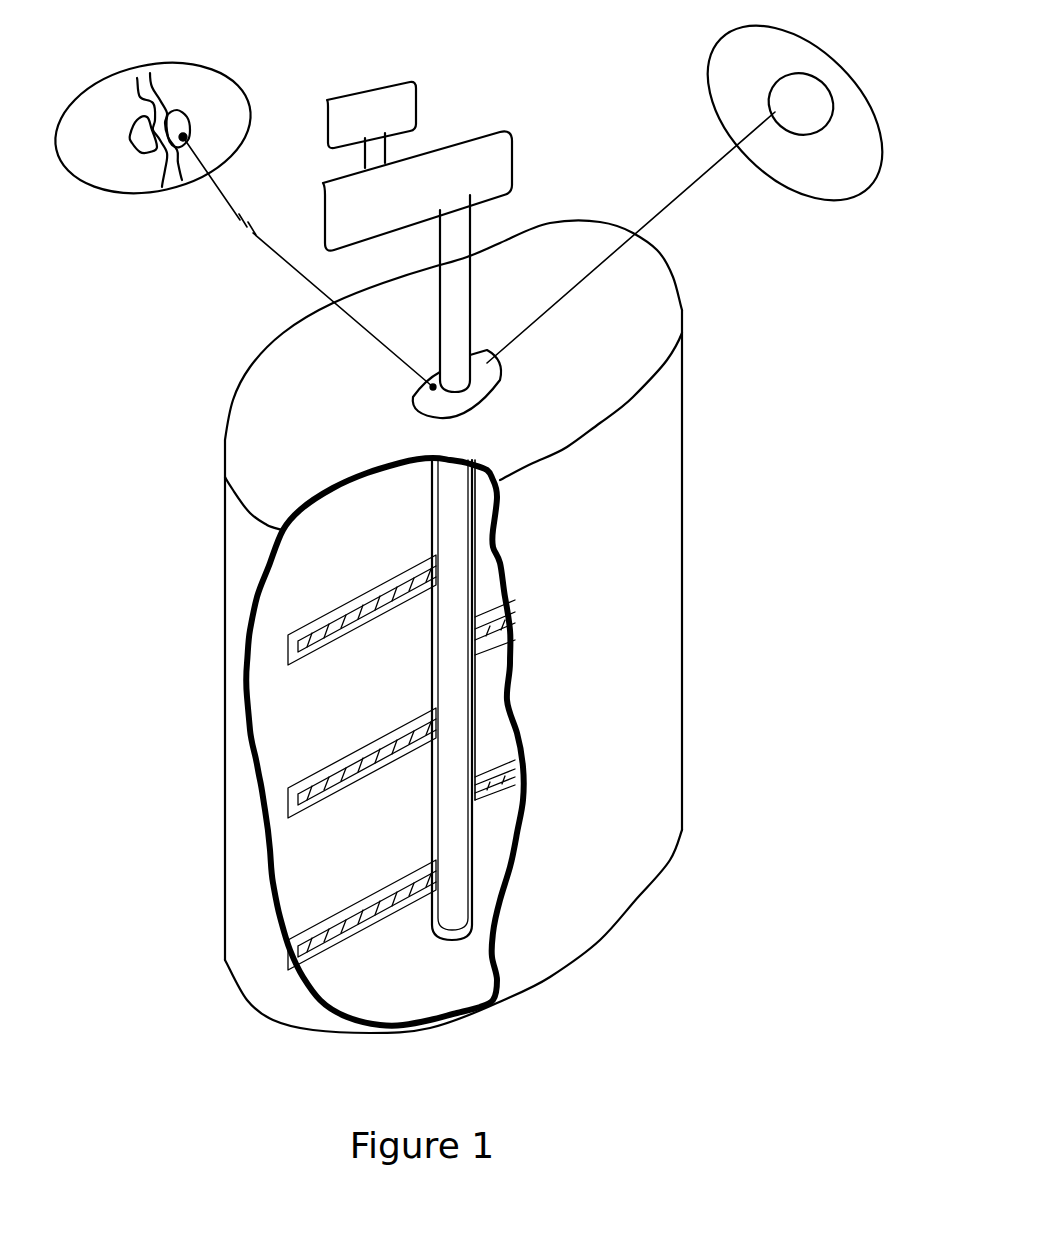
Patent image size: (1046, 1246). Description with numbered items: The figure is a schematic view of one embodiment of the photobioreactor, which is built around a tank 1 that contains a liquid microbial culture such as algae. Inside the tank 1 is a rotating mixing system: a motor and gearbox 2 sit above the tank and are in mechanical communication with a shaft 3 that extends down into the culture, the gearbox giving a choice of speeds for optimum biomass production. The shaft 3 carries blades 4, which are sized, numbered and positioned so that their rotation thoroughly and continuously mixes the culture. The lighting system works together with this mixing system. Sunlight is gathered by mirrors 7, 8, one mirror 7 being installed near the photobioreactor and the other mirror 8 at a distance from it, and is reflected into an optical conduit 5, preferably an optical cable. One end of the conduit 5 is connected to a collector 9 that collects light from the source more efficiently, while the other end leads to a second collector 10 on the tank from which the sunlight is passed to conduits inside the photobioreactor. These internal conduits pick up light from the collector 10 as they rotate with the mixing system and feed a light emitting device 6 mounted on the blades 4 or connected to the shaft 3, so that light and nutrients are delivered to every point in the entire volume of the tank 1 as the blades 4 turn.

The tank 1 is at (600, 665).
The motor and gearbox 2 is at (465, 165).
The shaft 3 is at (457, 572).
The blades 4 is at (330, 763).
The conduit 5 is at (183, 137).
The light emitting device 6 is at (288, 790).
The mirror 7 is at (215, 92).
The mirror 8 is at (730, 72).
The collector 9 is at (143, 140).
The collector 10 is at (432, 400).